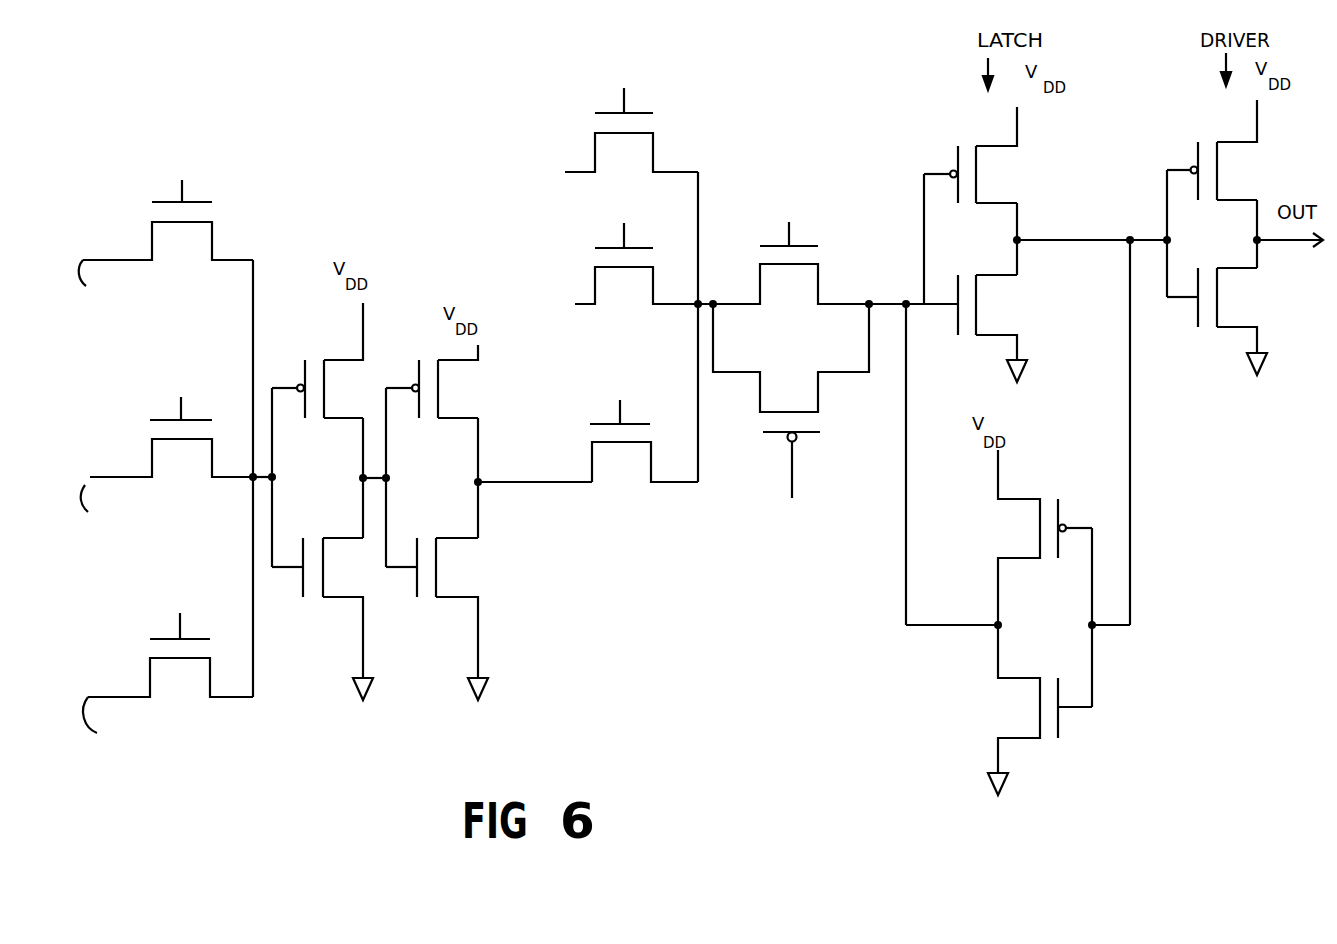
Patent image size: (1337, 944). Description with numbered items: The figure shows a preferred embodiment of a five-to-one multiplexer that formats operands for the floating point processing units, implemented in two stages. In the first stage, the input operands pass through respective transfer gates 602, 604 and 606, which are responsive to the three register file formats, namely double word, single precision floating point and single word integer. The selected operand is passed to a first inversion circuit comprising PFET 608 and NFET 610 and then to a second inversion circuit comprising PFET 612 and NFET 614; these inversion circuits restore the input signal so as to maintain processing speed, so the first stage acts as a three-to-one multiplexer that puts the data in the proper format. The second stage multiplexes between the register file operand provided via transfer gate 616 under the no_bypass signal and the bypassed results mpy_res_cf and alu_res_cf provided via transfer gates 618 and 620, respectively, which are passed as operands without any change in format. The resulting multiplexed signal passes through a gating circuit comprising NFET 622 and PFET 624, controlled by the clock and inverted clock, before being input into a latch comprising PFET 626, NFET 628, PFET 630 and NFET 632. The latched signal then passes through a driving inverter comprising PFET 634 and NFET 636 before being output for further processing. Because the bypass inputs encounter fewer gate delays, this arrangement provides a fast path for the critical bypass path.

The transfer gate 602 is at (150, 235).
The transfer gate 604 is at (150, 458).
The transfer gate 606 is at (148, 667).
The PFET 608 is at (305, 367).
The NFET 610 is at (303, 600).
The PFET 612 is at (420, 368).
The NFET 614 is at (417, 575).
The transfer gate 616 is at (590, 460).
The transfer gate 618 is at (593, 283).
The transfer gate 620 is at (597, 133).
The NFET 622 is at (760, 275).
The PFET 624 is at (760, 390).
The PFET 626 is at (958, 157).
The NFET 628 is at (957, 322).
The PFET 630 is at (1093, 495).
The NFET 632 is at (1045, 740).
The PFET 634 is at (1230, 140).
The NFET 636 is at (1237, 330).